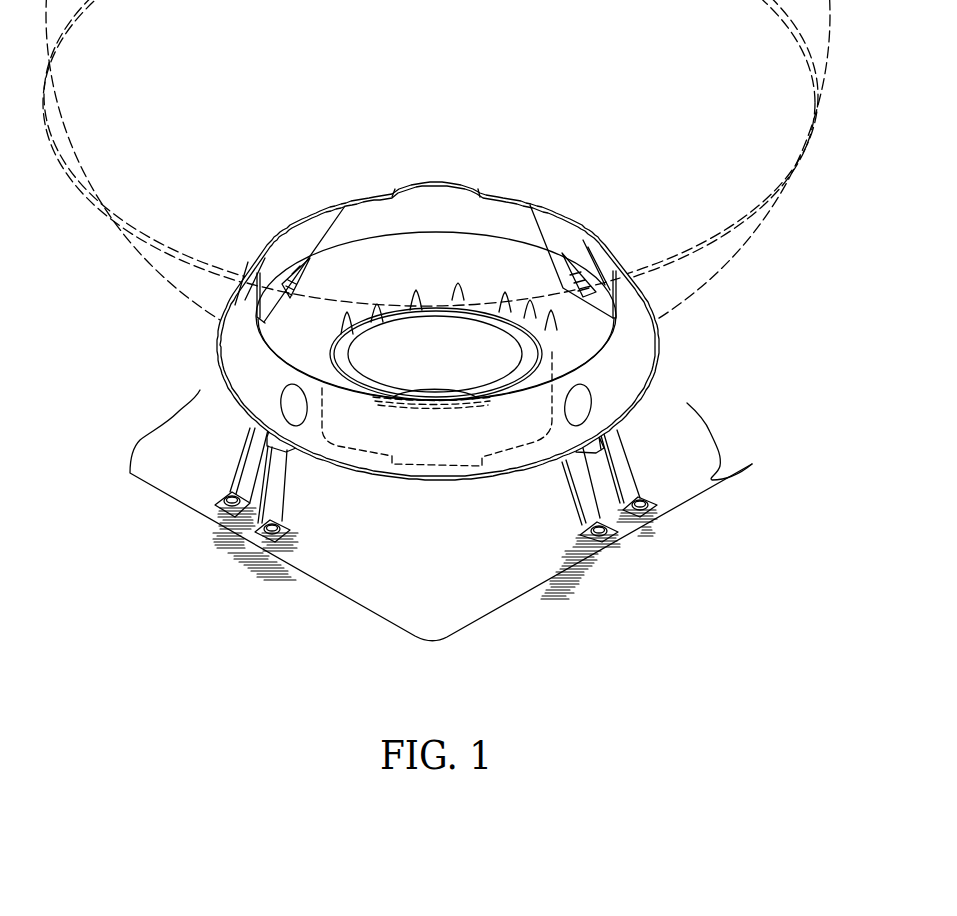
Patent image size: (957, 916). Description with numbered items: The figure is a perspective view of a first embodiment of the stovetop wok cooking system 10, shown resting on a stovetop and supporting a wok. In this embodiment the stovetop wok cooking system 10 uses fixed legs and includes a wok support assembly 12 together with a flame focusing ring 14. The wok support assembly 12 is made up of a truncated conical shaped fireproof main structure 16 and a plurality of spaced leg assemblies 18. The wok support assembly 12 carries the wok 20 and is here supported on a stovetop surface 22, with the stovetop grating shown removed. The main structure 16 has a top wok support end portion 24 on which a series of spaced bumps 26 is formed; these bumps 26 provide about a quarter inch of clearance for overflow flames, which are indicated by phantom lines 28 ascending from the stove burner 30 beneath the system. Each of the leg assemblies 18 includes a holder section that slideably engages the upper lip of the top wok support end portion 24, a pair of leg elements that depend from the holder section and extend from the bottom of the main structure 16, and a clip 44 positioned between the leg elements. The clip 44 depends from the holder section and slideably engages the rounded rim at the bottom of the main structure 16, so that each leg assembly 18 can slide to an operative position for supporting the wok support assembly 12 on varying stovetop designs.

The stovetop wok cooking system 10 is at (422, 338).
The wok support assembly 12 is at (479, 293).
The flame focusing ring 14 is at (553, 357).
The main structure 16 is at (613, 401).
The leg assemblies 18 is at (421, 497).
The wok 20 is at (733, 257).
The stovetop surface 22 is at (716, 467).
The top wok support end portion 24 is at (521, 190).
The bumps 26 is at (440, 182).
The phantom lines 28 is at (443, 324).
The stove burner 30 is at (497, 312).
The clip 44 is at (280, 441).